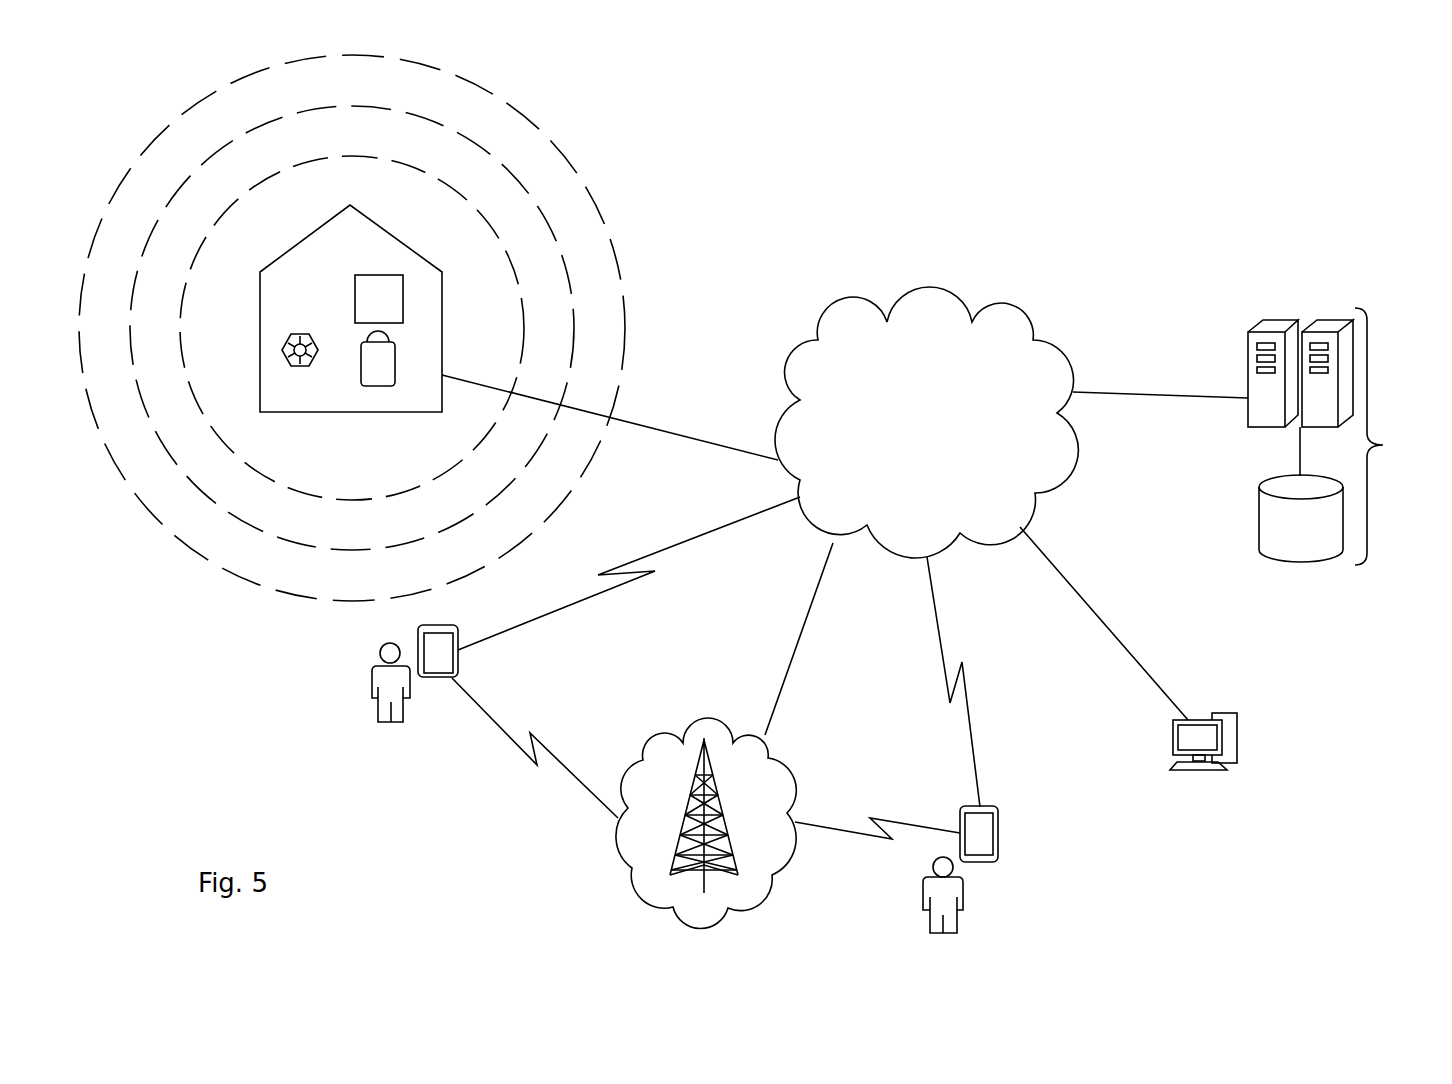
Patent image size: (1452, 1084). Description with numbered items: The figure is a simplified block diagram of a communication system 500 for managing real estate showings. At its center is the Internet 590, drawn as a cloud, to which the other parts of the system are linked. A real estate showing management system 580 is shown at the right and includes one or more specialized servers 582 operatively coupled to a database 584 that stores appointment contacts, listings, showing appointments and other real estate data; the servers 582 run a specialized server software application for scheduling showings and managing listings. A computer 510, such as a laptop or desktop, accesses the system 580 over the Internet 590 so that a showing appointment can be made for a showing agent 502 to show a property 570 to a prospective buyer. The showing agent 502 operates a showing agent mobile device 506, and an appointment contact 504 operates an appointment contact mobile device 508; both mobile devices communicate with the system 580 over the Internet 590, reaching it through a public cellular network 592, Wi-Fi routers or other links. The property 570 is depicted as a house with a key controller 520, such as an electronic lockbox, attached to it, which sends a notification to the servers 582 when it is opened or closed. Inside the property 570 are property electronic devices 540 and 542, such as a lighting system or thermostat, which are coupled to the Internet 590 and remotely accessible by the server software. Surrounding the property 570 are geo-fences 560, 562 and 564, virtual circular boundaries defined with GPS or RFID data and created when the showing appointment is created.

The communication system 500 is at (1087, 119).
The showing agent 502 is at (375, 698).
The appointment contact 504 is at (925, 889).
The showing agent mobile device 506 is at (437, 680).
The appointment contact mobile device 508 is at (997, 860).
The computer 510 is at (1235, 762).
The key controller 520 is at (385, 385).
The property electronic device 540 is at (290, 340).
The property electronic device 542 is at (365, 275).
The geo-fence 560 is at (447, 185).
The geo-fence 562 is at (538, 210).
The geo-fence 564 is at (612, 248).
The property 570 is at (345, 413).
The real estate showing management system 580 is at (1334, 440).
The specialized server 582 is at (1280, 320).
The database 584 is at (1300, 557).
The Internet 590 is at (826, 318).
The public cellular network 592 is at (632, 885).